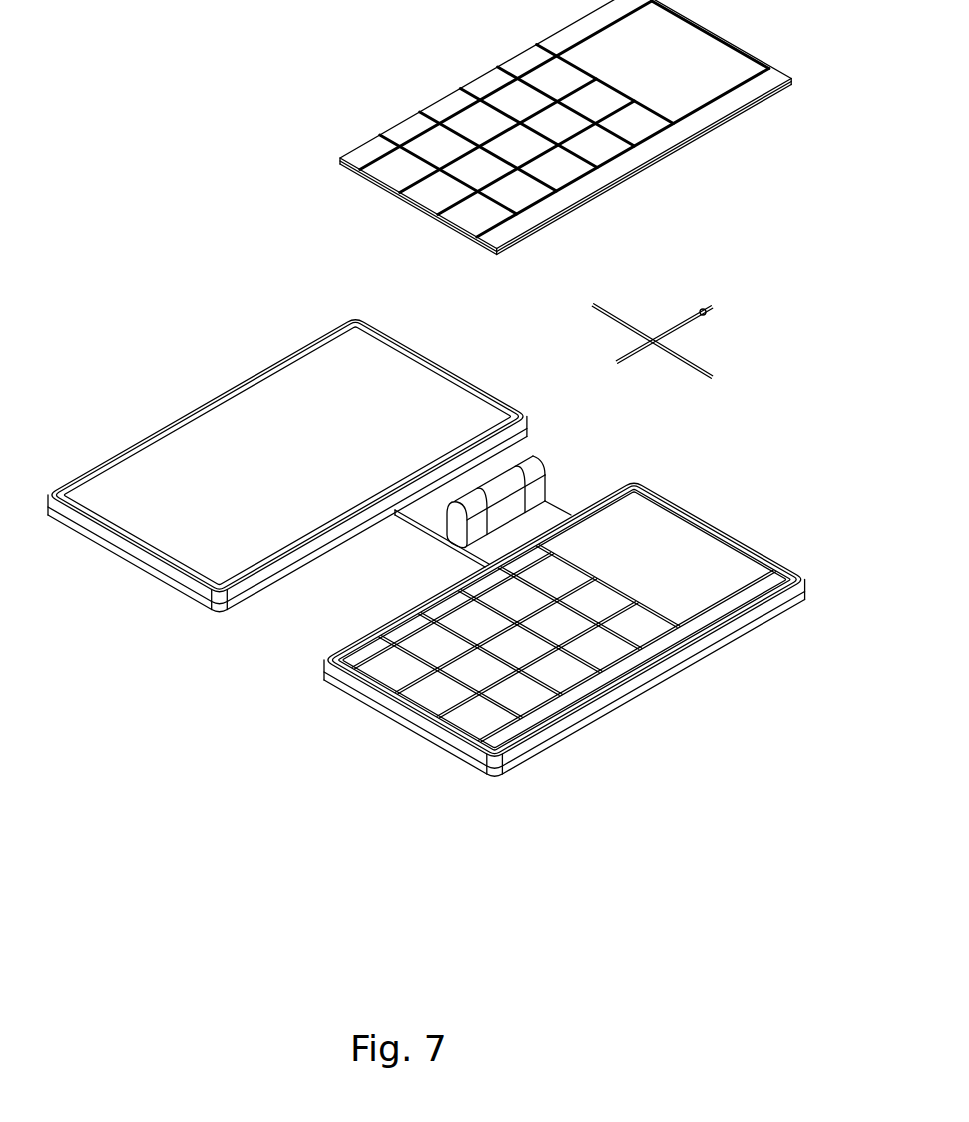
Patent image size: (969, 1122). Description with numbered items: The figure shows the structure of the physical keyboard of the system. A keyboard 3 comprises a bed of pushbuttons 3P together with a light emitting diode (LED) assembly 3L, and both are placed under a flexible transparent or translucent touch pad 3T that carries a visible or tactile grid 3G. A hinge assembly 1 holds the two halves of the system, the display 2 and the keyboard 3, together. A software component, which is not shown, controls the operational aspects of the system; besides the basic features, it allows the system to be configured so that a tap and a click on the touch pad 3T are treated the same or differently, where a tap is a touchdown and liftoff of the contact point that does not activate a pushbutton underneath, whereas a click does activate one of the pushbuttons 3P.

The hinge assembly 1 is at (428, 575).
The display 2 is at (172, 390).
The keyboard 3 is at (506, 652).
The grid 3G is at (445, 128).
The touch pad 3T is at (715, 80).
The light emitting diode (LED) assembly 3L is at (727, 285).
The bed of pushbuttons 3P is at (517, 694).